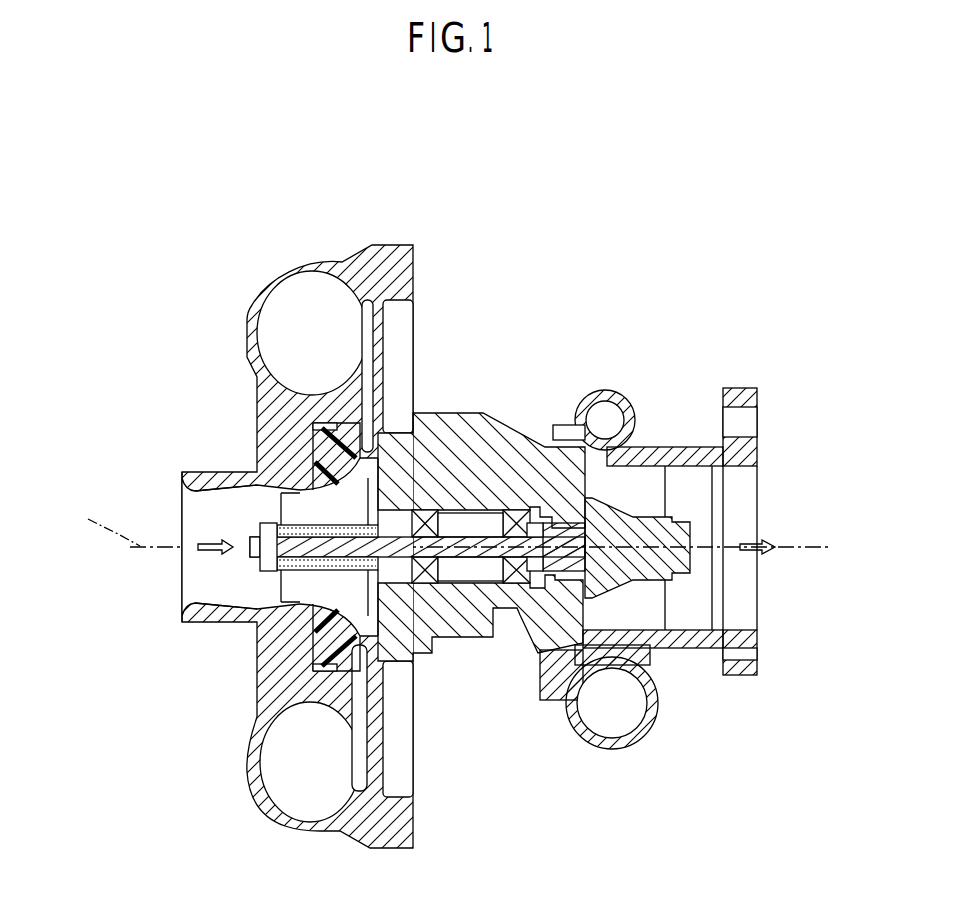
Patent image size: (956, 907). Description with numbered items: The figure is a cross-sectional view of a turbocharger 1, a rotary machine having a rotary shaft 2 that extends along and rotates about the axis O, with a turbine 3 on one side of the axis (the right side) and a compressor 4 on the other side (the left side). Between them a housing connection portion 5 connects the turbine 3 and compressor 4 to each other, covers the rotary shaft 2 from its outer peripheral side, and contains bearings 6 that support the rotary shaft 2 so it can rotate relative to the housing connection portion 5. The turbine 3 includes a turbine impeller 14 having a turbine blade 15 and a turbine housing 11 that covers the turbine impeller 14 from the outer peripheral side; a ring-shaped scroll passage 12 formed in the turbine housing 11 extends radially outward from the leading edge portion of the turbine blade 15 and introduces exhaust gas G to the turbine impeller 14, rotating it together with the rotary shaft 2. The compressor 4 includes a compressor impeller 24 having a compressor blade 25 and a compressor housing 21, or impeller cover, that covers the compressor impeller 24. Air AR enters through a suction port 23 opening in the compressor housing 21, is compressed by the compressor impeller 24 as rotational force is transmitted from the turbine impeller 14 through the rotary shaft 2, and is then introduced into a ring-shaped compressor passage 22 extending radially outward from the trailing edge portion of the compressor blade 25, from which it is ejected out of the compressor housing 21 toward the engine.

The turbocharger 1 is at (448, 523).
The rotary shaft 2 is at (470, 557).
The turbine 3 is at (676, 610).
The compressor 4 is at (260, 546).
The housing connection portion 5 is at (486, 422).
The bearings 6 is at (425, 580).
The turbine housing 11 is at (648, 555).
The scroll passage 12 is at (623, 718).
The turbine impeller 14 is at (608, 522).
The turbine blade 15 is at (690, 602).
The compressor housing 21 is at (258, 632).
The compressor passage 22 is at (317, 770).
The suction port 23 is at (205, 486).
The compressor impeller 24 is at (353, 588).
The compressor blade 25 is at (302, 500).